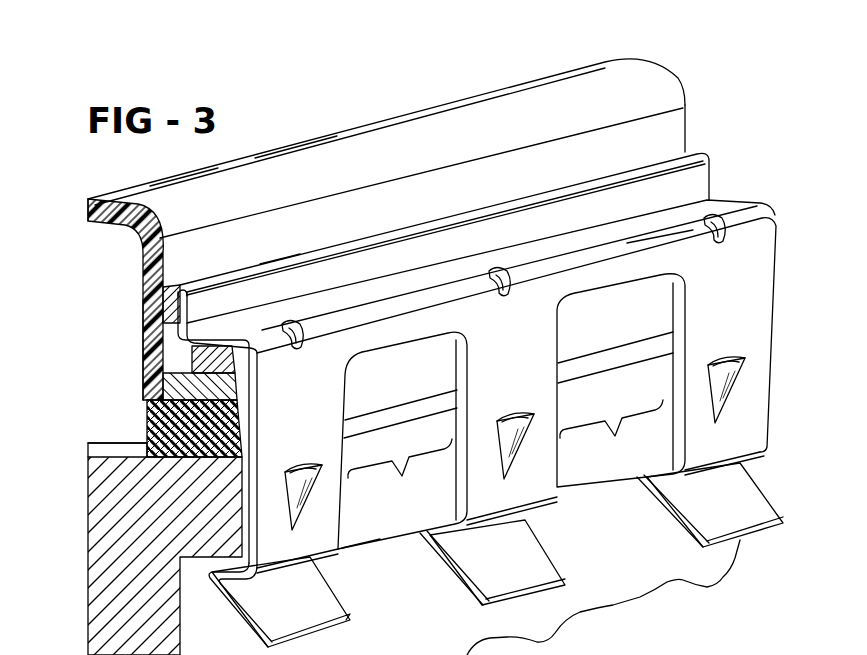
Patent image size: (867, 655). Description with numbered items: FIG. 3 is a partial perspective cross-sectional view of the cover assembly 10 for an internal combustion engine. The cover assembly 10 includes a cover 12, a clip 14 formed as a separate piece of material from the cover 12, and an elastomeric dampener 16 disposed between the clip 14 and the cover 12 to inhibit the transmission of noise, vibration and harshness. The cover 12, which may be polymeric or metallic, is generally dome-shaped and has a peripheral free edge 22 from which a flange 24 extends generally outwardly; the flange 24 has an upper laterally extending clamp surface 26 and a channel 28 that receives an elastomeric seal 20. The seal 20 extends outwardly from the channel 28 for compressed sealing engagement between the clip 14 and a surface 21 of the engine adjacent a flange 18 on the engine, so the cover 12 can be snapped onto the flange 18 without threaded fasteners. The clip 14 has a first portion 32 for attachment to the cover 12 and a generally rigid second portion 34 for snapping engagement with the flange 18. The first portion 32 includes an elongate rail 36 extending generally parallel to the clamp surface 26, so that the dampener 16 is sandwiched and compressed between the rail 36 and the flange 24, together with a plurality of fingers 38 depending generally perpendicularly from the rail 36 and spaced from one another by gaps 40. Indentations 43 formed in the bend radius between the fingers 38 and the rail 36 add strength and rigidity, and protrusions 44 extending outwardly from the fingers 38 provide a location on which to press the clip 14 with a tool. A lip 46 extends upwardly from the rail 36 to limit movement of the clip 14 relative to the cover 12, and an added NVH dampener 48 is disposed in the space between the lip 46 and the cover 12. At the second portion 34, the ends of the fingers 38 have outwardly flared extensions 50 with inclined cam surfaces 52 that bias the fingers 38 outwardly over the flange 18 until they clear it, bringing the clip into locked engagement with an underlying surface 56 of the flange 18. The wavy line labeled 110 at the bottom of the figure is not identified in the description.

The cover assembly 10 is at (697, 80).
The cover 12 is at (455, 115).
The clip 14 is at (710, 202).
The elastomeric dampener 16 is at (157, 333).
The flange 18 is at (123, 507).
The elastomeric seal 20 is at (108, 455).
The surface 21 is at (117, 440).
The peripheral free edge 22 is at (125, 410).
The flange 24 is at (253, 408).
The clamp surface 26 is at (230, 367).
The channel 28 is at (143, 397).
The first portion 32 is at (301, 243).
The second portion 34 is at (346, 562).
The elongate rail 36 is at (598, 235).
The fingers 38 is at (300, 442).
The gaps 40 is at (402, 476).
The indentations 43 is at (292, 325).
The protrusions 44 is at (297, 492).
The lip 46 is at (218, 300).
The NVH dampener 48 is at (147, 293).
The outwardly flared extensions 50 is at (317, 620).
The inclined cam surfaces 52 is at (223, 600).
The underlying surface 56 is at (380, 541).
The surface 110 is at (715, 650).